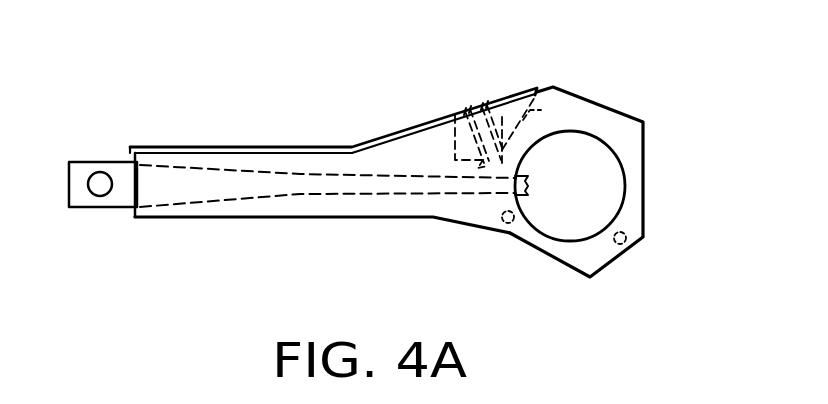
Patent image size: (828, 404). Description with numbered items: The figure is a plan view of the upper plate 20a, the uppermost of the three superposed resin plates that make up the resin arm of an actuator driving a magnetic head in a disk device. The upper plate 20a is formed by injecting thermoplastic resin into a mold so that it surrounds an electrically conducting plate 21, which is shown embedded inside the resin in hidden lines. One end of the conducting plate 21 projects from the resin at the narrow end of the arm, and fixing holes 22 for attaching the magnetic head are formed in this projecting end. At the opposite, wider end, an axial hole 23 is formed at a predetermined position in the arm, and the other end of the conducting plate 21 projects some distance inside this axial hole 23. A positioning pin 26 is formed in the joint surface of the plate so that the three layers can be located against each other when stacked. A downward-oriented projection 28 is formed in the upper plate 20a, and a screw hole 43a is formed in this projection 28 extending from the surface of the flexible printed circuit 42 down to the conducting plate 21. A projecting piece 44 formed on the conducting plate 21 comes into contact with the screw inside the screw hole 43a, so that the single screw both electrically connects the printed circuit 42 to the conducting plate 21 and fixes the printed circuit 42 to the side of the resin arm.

The upper plate 20a is at (600, 118).
The electrically conducting plate 21 is at (163, 170).
The fixing holes 22 is at (100, 190).
The axial hole 23 is at (608, 160).
The positioning pin 26 is at (508, 224).
The projection 28 is at (533, 109).
The flexible printed circuit 42 is at (375, 141).
The screw hole 43a is at (470, 107).
The projecting piece 44 is at (481, 165).